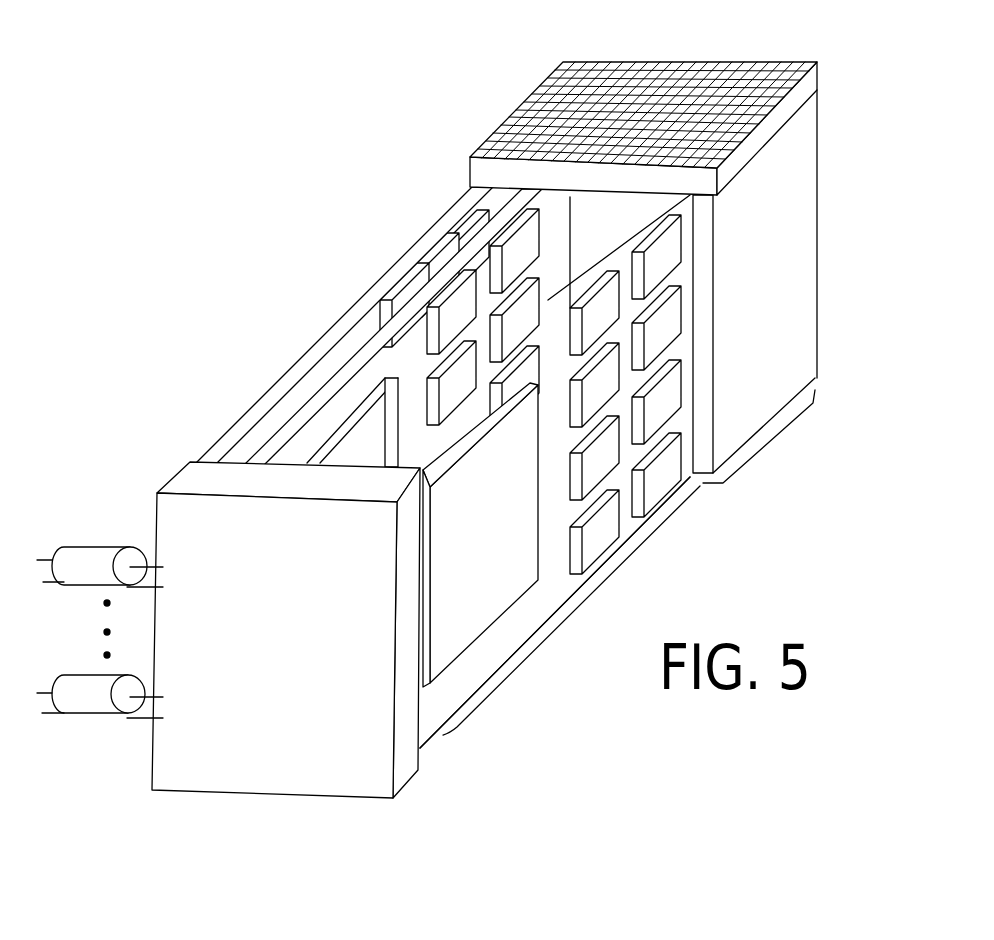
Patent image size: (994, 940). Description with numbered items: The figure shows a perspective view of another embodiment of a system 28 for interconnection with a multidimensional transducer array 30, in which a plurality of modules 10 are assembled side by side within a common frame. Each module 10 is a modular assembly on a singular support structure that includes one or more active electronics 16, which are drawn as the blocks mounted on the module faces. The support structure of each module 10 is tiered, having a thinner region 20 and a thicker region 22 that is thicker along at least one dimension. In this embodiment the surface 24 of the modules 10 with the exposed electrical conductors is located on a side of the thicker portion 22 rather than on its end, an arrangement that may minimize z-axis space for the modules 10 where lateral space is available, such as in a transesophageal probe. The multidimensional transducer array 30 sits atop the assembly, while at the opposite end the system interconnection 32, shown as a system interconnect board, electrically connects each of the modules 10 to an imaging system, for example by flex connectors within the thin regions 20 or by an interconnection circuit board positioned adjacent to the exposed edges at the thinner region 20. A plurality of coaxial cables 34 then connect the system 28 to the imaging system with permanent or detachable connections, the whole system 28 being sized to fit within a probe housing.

The component 10 is at (342, 312).
The active electronics 16 is at (471, 467).
The thinner region 20 is at (598, 575).
The thicker region 22 is at (768, 438).
The surface 24 is at (787, 121).
The system 28 is at (150, 391).
The multidimensional transducer array 30 is at (818, 60).
The system interconnection 32 is at (333, 800).
The coaxial cables 34 is at (66, 545).